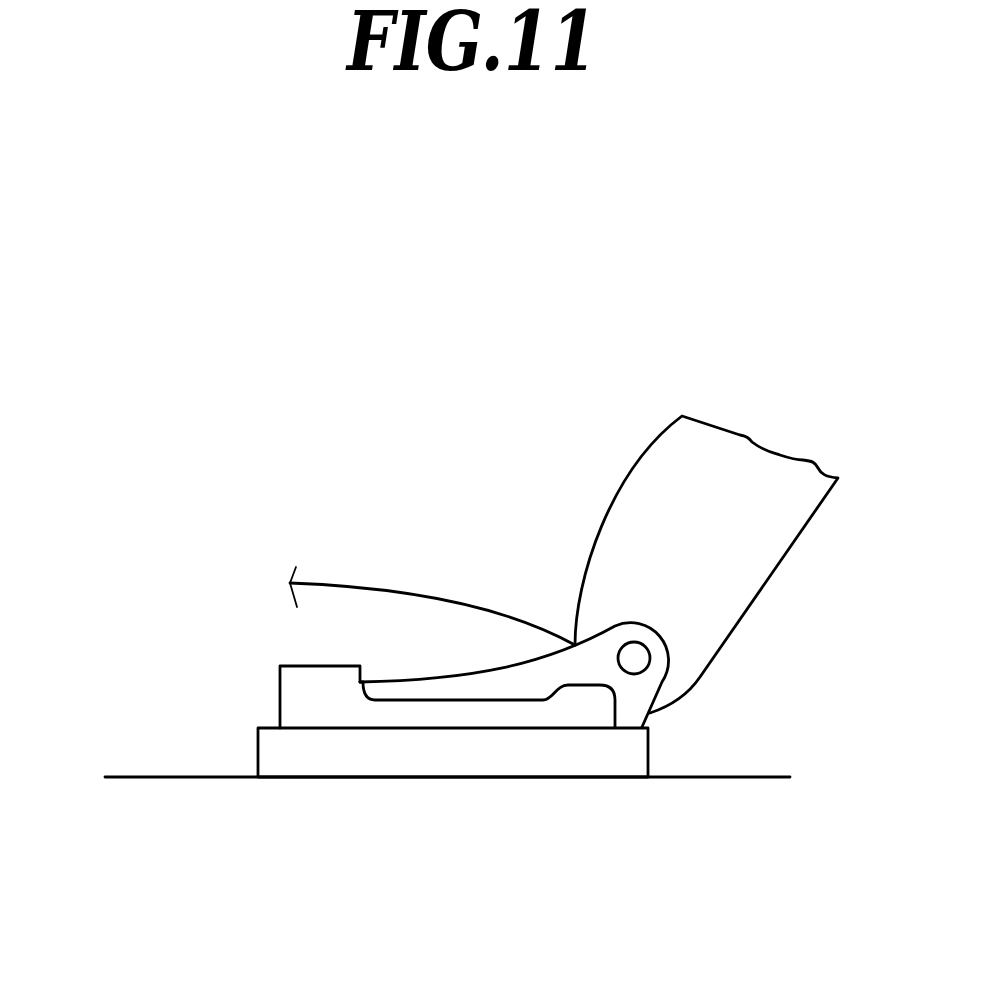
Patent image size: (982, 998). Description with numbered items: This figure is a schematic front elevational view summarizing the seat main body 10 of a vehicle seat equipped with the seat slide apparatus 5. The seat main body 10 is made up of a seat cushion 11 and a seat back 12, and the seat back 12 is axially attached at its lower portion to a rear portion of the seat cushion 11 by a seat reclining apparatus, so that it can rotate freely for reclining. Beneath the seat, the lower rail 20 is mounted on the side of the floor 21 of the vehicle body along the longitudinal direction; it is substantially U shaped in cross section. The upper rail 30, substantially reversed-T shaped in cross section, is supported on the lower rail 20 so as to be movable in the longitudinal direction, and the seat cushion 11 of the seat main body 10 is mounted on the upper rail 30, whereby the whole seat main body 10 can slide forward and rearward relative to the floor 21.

The seat slide apparatus 5 is at (257, 699).
The seat main body 10 is at (396, 290).
The seat cushion 11 is at (452, 596).
The seat back 12 is at (617, 497).
The lower rail 20 is at (517, 760).
The floor 21 is at (705, 777).
The upper rail 30 is at (370, 713).